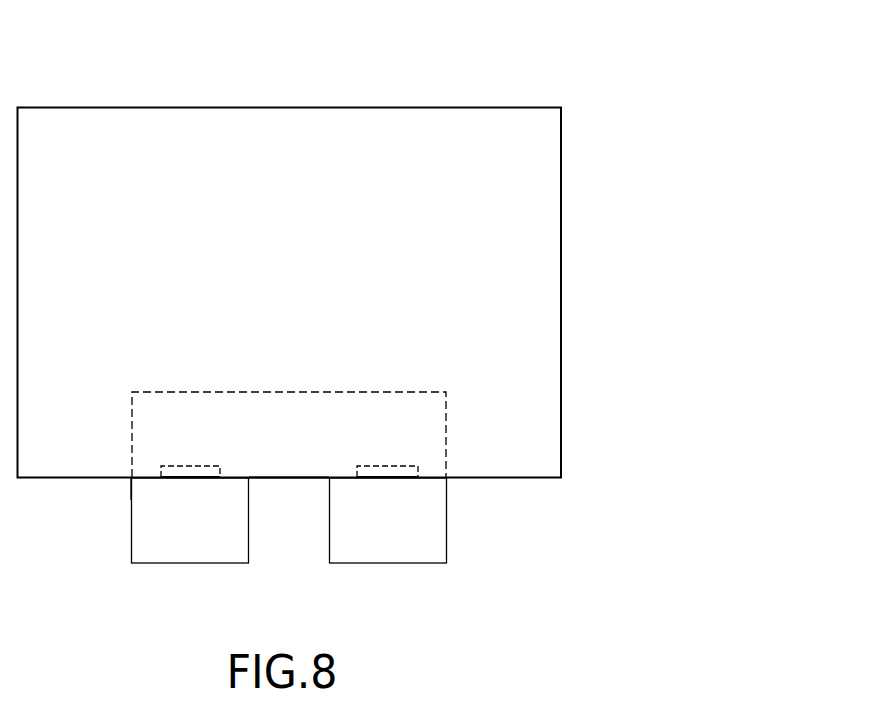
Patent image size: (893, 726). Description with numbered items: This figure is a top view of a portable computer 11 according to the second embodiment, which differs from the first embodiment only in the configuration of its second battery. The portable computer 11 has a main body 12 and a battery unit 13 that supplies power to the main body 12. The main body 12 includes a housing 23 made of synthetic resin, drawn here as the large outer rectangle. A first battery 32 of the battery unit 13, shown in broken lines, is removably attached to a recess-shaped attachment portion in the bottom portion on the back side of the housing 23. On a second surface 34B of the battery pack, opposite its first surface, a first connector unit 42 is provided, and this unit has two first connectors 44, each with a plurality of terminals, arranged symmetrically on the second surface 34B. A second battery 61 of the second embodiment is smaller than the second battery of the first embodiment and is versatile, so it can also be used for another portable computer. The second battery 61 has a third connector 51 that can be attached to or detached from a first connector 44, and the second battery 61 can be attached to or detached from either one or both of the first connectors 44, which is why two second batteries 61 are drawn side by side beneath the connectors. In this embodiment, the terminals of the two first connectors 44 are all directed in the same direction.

The portable computer 11 is at (508, 87).
The main body 12 is at (541, 154).
The housing 23 is at (562, 240).
The battery unit 13 is at (517, 501).
The first battery 32 is at (418, 392).
The first connector 44 is at (185, 466).
The first connector unit 42 is at (131, 488).
The third connector 51 is at (172, 480).
The second surface 34B is at (293, 480).
The second battery 61 is at (192, 565).